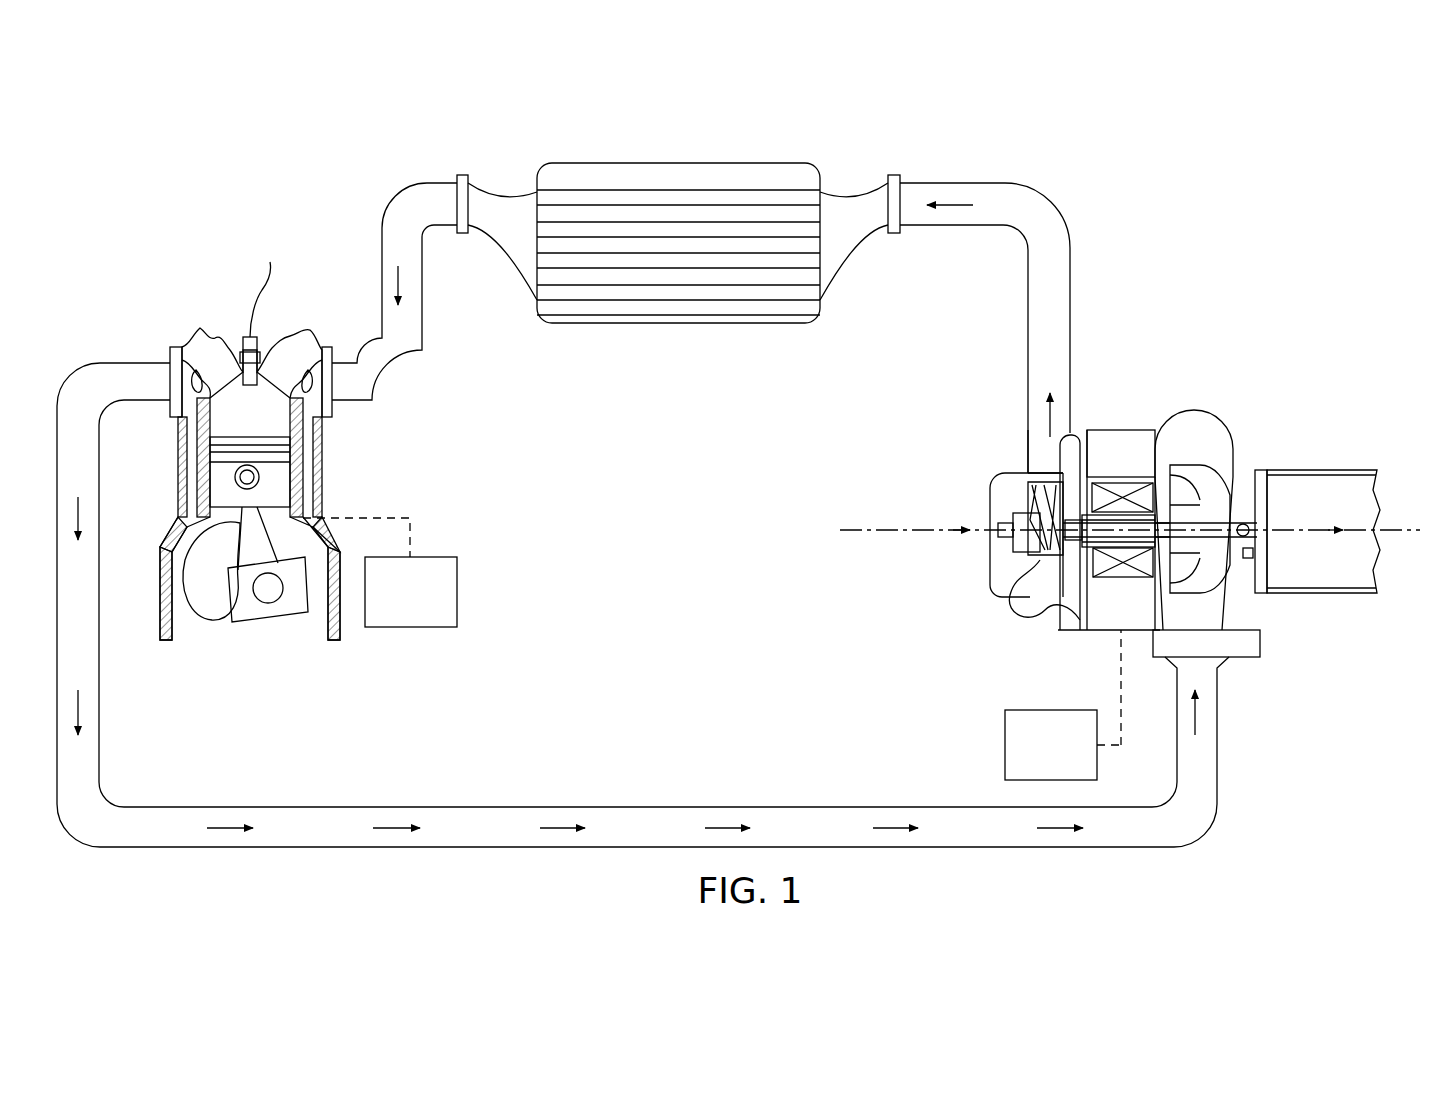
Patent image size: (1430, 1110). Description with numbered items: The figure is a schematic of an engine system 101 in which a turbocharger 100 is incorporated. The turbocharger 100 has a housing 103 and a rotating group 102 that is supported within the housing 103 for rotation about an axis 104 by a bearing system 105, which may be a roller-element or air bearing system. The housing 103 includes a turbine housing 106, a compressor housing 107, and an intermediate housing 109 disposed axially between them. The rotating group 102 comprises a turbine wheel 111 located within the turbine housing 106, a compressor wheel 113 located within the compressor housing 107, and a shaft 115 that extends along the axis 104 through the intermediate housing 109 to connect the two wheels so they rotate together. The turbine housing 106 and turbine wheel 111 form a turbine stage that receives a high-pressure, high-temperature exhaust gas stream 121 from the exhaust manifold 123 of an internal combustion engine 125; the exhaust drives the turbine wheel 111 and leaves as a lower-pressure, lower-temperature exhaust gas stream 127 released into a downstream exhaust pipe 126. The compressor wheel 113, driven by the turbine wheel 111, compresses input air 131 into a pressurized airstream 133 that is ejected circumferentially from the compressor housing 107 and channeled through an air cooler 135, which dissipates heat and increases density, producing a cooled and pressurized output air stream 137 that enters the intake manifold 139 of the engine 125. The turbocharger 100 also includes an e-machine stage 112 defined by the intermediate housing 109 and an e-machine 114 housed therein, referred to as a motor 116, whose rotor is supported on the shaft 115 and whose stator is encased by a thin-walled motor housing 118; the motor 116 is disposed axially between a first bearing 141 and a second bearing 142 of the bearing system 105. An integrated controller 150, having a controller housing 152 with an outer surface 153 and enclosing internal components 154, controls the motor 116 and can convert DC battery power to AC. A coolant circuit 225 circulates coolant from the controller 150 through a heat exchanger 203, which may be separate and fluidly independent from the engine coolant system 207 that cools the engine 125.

The turbocharger 100 is at (1196, 351).
The engine system 101 is at (224, 204).
The rotating group 102 is at (1103, 537).
The housing 103 is at (1183, 407).
The axis 104 is at (1392, 526).
The bearing system 105 is at (1075, 505).
The turbine housing 106 is at (1230, 458).
The compressor housing 107 is at (1004, 603).
The intermediate housing 109 is at (1105, 632).
The turbine wheel 111 is at (1250, 523).
The e-machine stage 112 is at (1097, 426).
The compressor wheel 113 is at (1040, 566).
The e-machine 114 is at (1134, 613).
The shaft 115 is at (1166, 488).
The motor 116 is at (1170, 588).
The motor housing 118 is at (1135, 582).
The exhaust gas stream 121 is at (722, 826).
The exhaust manifold 123 is at (265, 451).
The internal combustion engine 125 is at (282, 487).
The exhaust pipe 126 is at (1326, 468).
The lower-pressure exhaust gas stream 127 is at (1310, 534).
The input air 131 is at (923, 536).
The pressurized airstream 133 is at (1040, 427).
The air cooler 135 is at (668, 192).
The output air stream 137 is at (396, 282).
The intake manifold 139 is at (318, 398).
The first bearing 141 is at (1166, 524).
The second bearing 142 is at (1075, 522).
The integrated controller 150 is at (1122, 426).
The controller housing 152 is at (1160, 430).
The outer surface 153 is at (1090, 646).
The internal components 154 is at (1068, 430).
The heat exchanger 203 is at (1005, 745).
The engine coolant system 207 is at (427, 519).
The coolant circuit 225 is at (1121, 728).